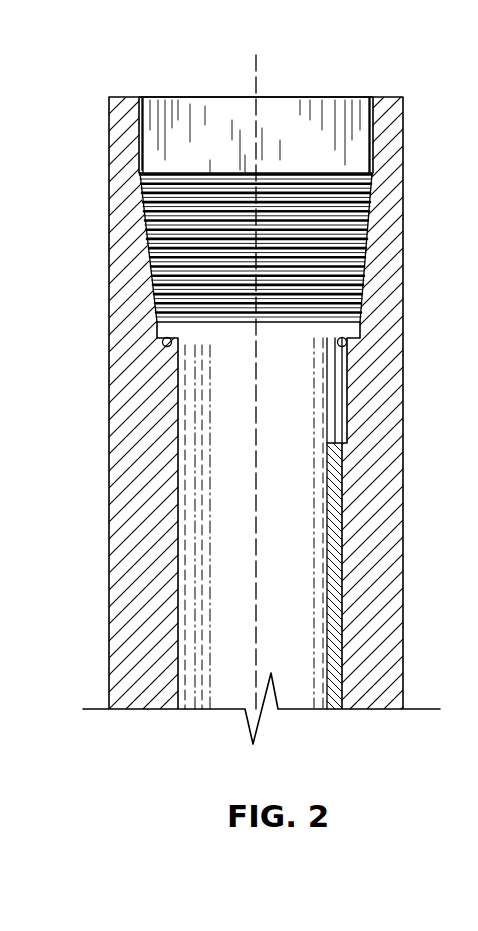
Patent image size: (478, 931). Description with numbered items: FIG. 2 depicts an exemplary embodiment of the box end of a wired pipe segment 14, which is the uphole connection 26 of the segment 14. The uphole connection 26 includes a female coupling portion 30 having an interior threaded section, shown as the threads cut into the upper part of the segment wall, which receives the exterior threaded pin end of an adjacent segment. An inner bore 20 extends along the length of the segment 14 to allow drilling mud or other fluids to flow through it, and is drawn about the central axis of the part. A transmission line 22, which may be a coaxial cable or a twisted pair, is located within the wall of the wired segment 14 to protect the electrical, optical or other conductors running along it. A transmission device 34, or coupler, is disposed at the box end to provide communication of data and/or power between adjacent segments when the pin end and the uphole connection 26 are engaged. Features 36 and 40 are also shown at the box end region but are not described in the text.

The wired pipe segment 14 is at (127, 553).
The inner bore 20 is at (188, 626).
The transmission line 22 is at (343, 514).
The uphole connection 26 is at (256, 76).
The female coupling portion 30 is at (365, 232).
The transmission device 34 is at (168, 358).
The counterbore 36 is at (373, 117).
The sleeve gap 40 is at (360, 338).